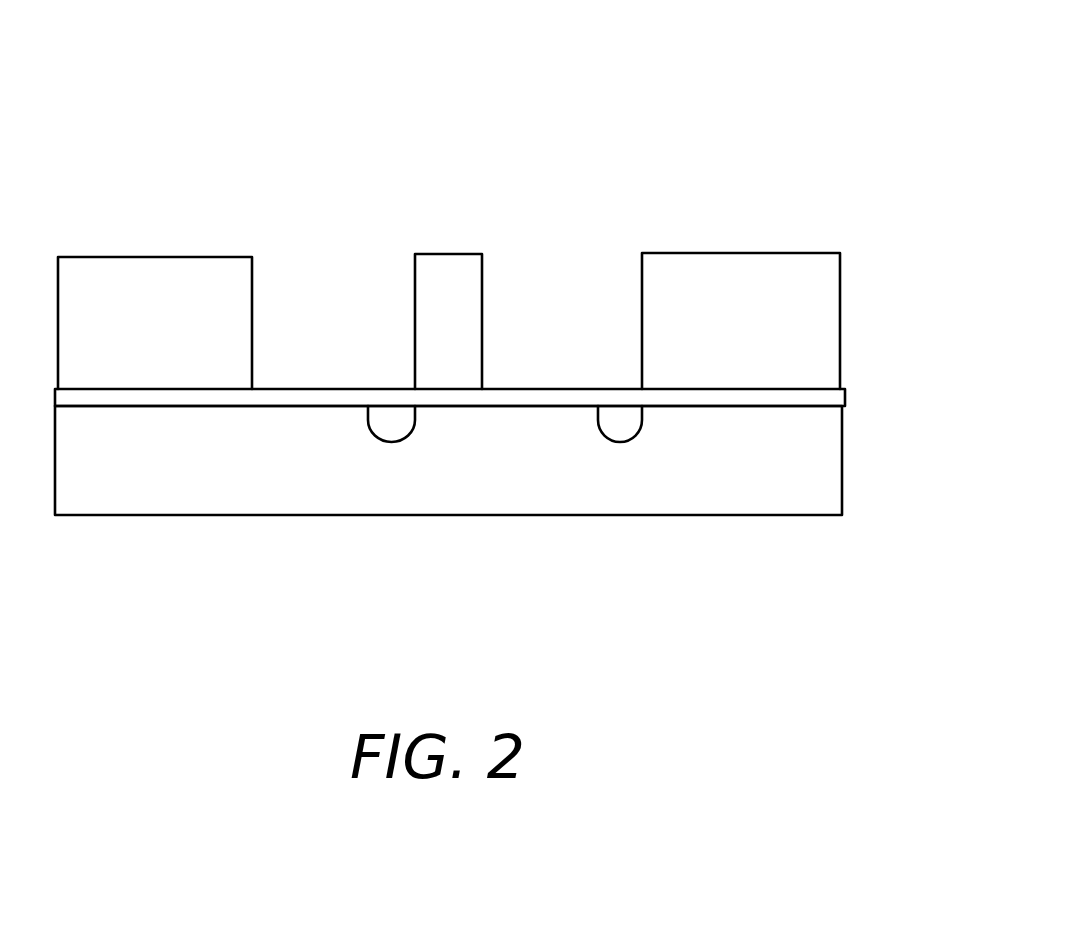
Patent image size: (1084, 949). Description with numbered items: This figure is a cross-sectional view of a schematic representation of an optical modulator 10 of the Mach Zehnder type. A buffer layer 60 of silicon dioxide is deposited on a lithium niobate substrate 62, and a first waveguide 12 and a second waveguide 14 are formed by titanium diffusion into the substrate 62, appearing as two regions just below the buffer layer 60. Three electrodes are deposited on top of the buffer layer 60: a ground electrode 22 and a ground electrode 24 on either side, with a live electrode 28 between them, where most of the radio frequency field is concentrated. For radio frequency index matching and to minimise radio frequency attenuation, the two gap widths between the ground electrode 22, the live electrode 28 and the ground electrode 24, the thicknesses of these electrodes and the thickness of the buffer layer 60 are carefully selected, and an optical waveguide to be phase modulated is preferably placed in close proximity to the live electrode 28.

The modulator 10 is at (505, 127).
The first waveguide 12 is at (388, 443).
The second waveguide 14 is at (623, 443).
The ground electrode 22 is at (735, 250).
The ground electrode 24 is at (137, 257).
The live electrode 28 is at (450, 253).
The buffer layer 60 is at (833, 397).
The substrate 62 is at (817, 473).